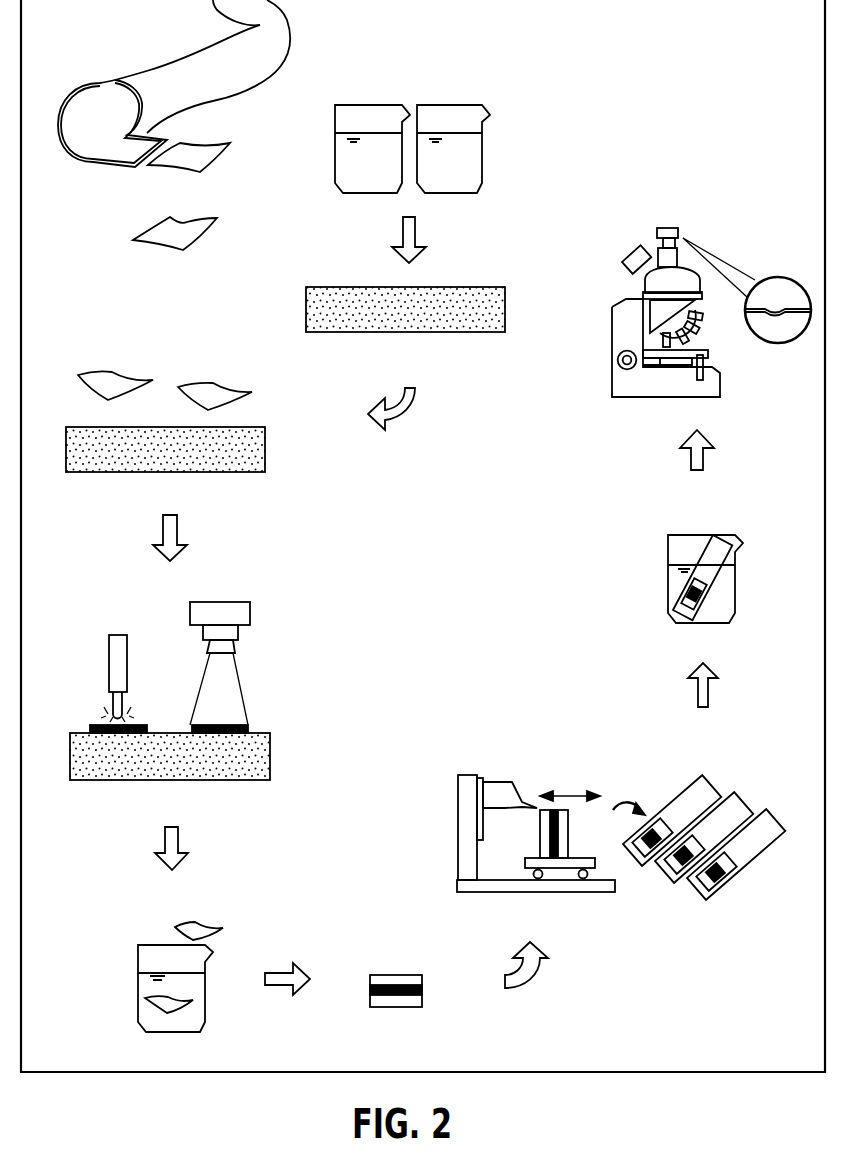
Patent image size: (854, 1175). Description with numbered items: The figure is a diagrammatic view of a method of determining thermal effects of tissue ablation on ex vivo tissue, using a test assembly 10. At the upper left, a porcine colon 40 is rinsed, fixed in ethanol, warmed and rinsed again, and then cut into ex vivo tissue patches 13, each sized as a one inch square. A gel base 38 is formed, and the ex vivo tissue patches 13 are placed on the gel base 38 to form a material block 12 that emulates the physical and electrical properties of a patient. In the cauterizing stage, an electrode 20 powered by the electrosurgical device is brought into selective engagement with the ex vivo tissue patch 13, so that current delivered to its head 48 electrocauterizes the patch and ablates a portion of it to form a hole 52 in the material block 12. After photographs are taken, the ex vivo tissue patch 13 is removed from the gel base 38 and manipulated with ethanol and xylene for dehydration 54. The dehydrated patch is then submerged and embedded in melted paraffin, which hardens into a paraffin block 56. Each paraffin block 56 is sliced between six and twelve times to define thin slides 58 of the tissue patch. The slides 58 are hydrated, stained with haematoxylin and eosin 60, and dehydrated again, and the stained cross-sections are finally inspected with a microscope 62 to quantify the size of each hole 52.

The test assembly 10 is at (90, 618).
The material block 12 is at (248, 422).
The ex vivo tissue patch 13 is at (207, 152).
The electrode 20 is at (129, 664).
The gel base 38 is at (498, 318).
The porcine colon 40 is at (165, 75).
The head 48 is at (126, 706).
The hole 52 is at (773, 310).
The dehydration 54 is at (147, 971).
The paraffin block 56 is at (388, 980).
The slide 58 is at (662, 822).
The haematoxylin and eosin (H&E) 60 is at (723, 605).
The microscope 62 is at (625, 295).